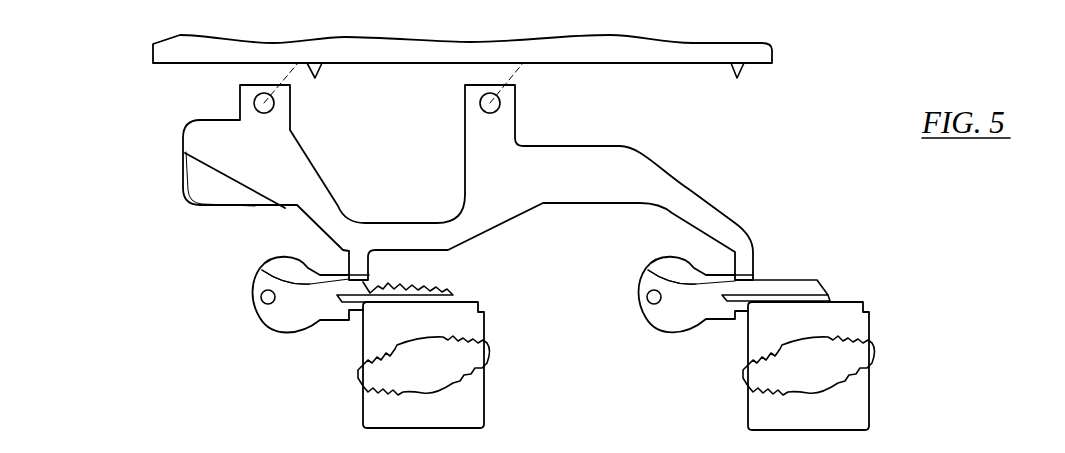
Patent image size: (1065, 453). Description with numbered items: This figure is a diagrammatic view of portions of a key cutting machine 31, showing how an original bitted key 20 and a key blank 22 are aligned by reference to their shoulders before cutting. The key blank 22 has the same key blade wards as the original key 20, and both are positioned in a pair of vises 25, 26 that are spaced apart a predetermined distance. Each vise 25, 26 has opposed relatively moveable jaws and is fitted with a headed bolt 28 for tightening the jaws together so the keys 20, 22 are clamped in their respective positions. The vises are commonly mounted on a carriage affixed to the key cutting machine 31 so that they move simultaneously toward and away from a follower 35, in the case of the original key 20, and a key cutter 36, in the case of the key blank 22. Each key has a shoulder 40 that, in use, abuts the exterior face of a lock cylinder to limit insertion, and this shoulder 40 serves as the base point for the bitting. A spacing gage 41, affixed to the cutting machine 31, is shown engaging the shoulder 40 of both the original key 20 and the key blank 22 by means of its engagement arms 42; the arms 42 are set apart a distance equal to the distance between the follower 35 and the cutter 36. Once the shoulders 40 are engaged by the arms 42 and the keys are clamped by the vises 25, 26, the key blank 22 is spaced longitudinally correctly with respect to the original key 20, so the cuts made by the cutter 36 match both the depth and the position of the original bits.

The original key 20 is at (274, 328).
The key blank 22 is at (661, 328).
The vise 25 is at (477, 392).
The vise 26 is at (860, 393).
The headed bolt 28 is at (370, 374).
The key cutting machine 31 is at (630, 65).
The follower 35 is at (388, 88).
The key cutter 36 is at (737, 78).
The shoulder 40 is at (262, 271).
The spacing gage 41 is at (557, 157).
The engagement arms 42 is at (370, 268).